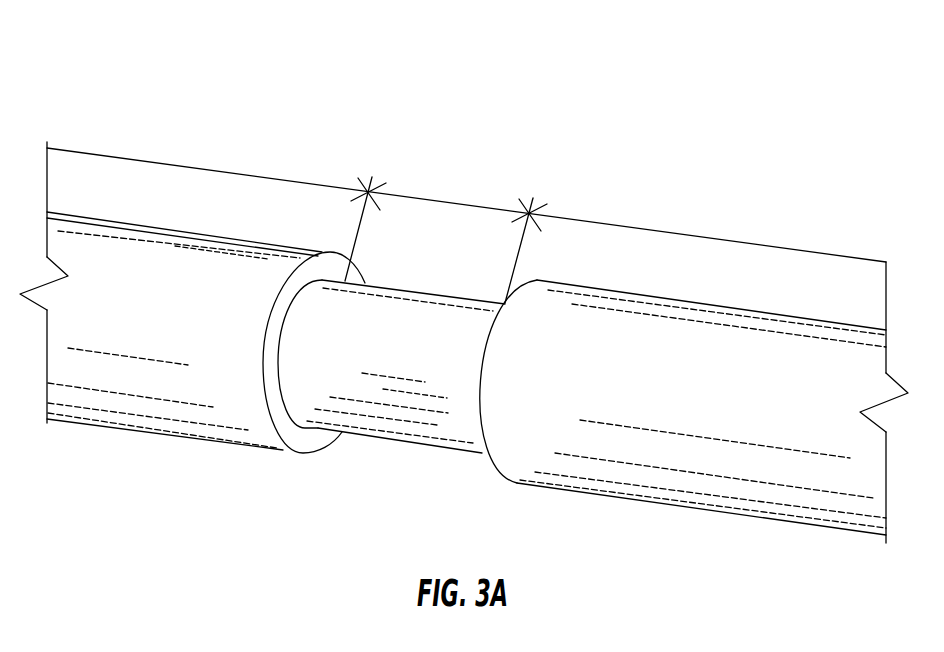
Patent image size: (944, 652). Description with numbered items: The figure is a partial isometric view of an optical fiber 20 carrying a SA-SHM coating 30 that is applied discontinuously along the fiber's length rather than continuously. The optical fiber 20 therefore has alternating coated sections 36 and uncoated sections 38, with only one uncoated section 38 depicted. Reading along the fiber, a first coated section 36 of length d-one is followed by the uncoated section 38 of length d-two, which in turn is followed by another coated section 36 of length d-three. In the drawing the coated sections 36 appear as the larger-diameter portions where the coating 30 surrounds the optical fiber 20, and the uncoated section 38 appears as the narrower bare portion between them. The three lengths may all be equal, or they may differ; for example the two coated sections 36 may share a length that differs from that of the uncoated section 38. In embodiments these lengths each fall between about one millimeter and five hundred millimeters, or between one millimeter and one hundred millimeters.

The optical fiber 20 is at (464, 283).
The SA-SHM coating 30 is at (199, 372).
The coated section 36 is at (220, 233).
The uncoated section 38 is at (440, 325).